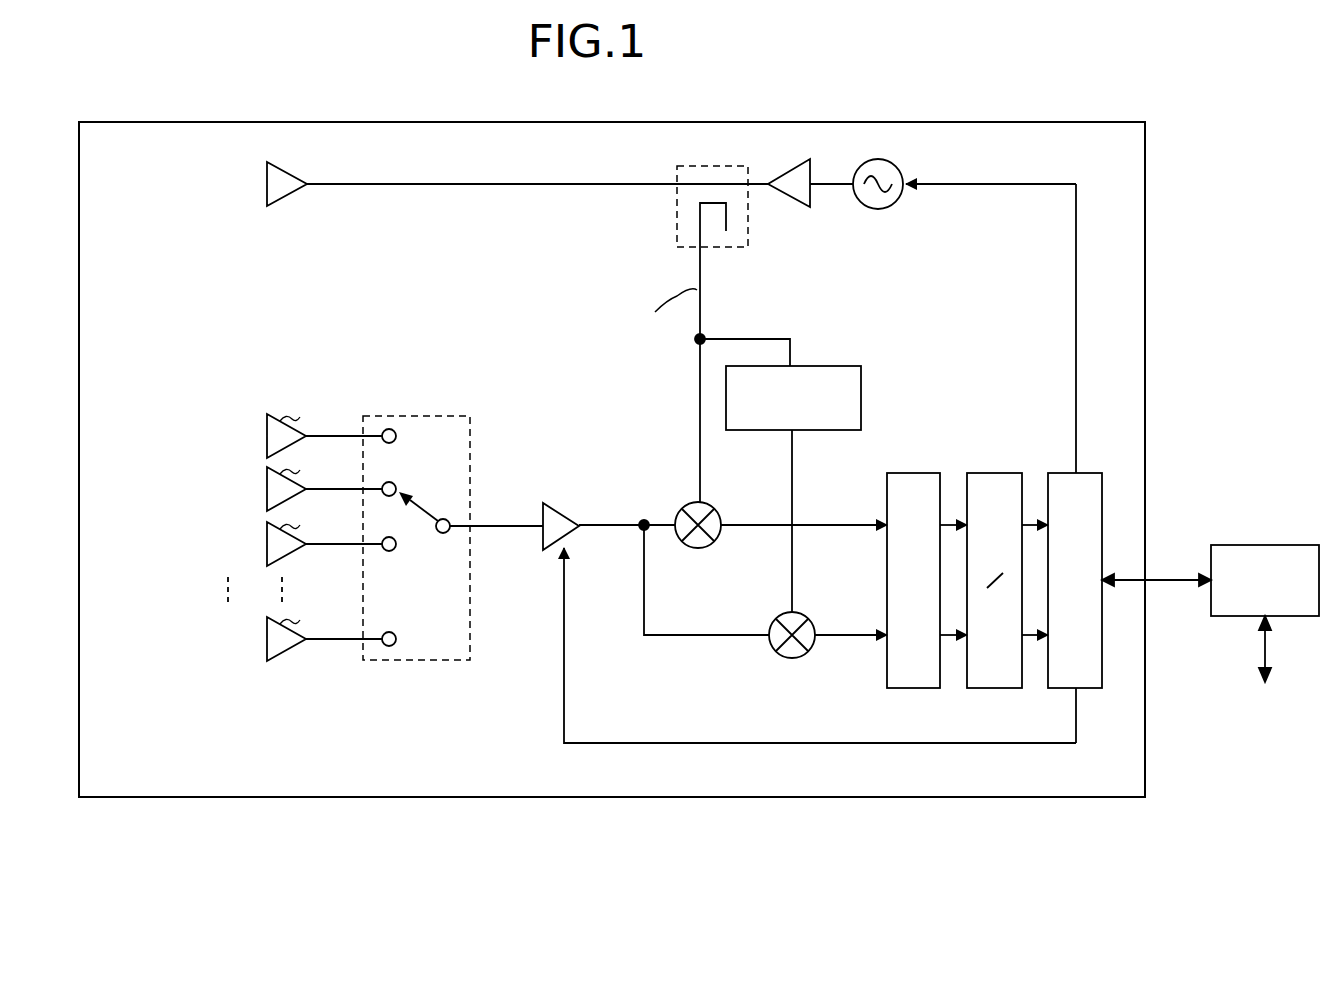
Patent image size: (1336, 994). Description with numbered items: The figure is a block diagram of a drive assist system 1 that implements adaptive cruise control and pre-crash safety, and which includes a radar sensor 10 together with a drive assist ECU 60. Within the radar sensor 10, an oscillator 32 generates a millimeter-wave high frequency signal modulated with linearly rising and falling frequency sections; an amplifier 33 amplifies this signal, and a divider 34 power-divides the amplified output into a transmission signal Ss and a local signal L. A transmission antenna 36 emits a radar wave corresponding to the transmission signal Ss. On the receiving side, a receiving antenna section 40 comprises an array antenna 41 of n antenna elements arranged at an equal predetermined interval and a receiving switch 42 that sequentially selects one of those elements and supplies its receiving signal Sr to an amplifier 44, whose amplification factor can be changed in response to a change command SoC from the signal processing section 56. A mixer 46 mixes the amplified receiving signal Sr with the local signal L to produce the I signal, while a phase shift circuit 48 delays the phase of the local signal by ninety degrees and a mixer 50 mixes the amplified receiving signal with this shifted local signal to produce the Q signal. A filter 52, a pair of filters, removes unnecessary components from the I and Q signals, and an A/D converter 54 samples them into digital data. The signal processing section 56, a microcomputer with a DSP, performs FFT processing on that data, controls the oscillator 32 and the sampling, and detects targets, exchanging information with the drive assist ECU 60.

The drive assist system 1 is at (877, 108).
The radar sensor 10 is at (785, 799).
The oscillator 32 is at (886, 208).
The amplifier 33 is at (794, 198).
The divider 34 is at (676, 196).
The transmission antenna 36 is at (284, 196).
The receiving antenna section 40 is at (332, 599).
The array antenna 41 is at (308, 664).
The receiving switch 42 is at (416, 571).
The amplifier 44 is at (556, 506).
The mixer 46 is at (693, 550).
The phase shift circuit 48 is at (828, 366).
The mixer 50 is at (780, 613).
The filter 52 is at (913, 472).
The A/D converter 54 is at (992, 472).
The signal processing section 56 is at (1058, 472).
The drive assist ECU 60 is at (1263, 545).